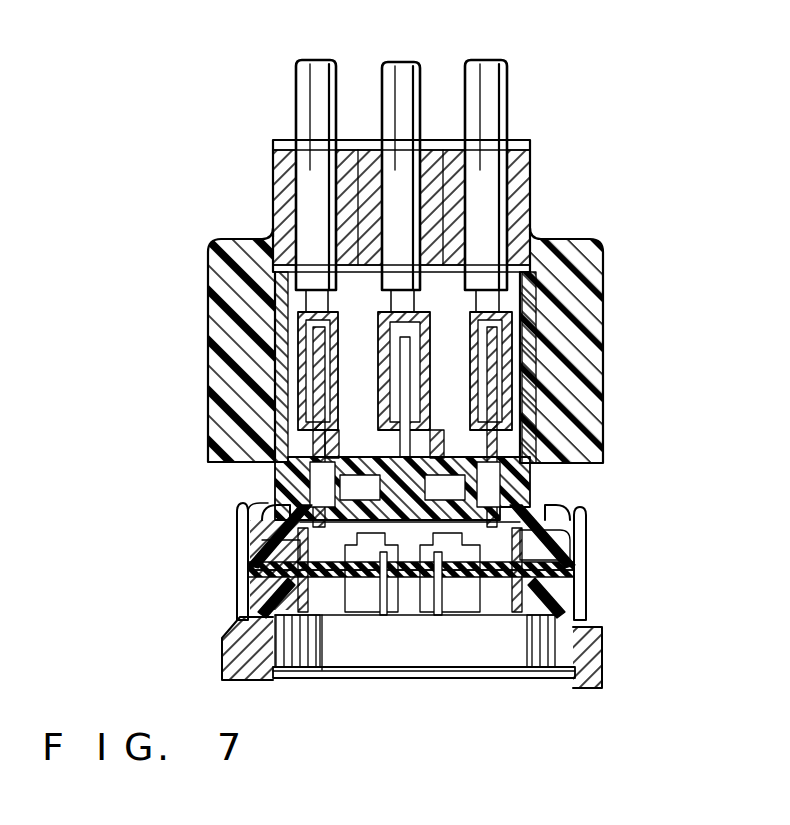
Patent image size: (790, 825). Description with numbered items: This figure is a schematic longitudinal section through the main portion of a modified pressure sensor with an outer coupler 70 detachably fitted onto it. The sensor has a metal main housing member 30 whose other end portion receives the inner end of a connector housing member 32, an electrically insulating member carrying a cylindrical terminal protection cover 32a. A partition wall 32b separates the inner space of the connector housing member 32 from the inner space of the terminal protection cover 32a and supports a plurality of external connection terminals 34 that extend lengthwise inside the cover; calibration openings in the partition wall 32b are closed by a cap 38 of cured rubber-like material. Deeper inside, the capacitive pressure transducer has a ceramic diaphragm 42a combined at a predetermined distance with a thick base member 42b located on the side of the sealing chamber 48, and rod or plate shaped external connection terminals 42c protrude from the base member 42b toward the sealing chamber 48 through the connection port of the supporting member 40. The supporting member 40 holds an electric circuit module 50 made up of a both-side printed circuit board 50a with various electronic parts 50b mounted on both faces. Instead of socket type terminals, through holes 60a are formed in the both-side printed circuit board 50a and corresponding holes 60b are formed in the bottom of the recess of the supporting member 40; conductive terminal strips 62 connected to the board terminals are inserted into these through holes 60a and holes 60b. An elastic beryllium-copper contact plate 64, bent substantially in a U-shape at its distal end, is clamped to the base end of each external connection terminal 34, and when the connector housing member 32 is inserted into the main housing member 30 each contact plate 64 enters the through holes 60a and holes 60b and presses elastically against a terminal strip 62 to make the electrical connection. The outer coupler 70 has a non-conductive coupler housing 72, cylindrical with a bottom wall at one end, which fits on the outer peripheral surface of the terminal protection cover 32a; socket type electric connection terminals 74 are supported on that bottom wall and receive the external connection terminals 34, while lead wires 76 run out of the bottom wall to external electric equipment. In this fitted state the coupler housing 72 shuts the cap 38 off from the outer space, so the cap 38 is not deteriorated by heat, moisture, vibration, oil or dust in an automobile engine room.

The main housing member 30 is at (603, 674).
The connector housing member 32 is at (558, 494).
The terminal protection cover 32a is at (540, 357).
The partition wall 32b is at (540, 428).
The external connection terminals 34 is at (330, 446).
The cap 38 is at (430, 460).
The supporting member 40 is at (575, 612).
The diaphragm 42a is at (527, 676).
The base member 42b is at (555, 650).
The external connection terminals 42c is at (395, 615).
The sealing chamber 48 is at (570, 549).
The electric circuit module 50 is at (300, 547).
The both-side printed circuit board 50a is at (322, 640).
The electronic parts 50b is at (356, 600).
The through holes 60a is at (290, 570).
The holes 60b is at (290, 585).
The terminal strips 62 is at (305, 560).
The contact plate 64 is at (270, 503).
The outer coupler 70 is at (538, 208).
The coupler housing 72 is at (603, 285).
The socket type electric connection terminals 74 is at (345, 337).
The lead wires 76 is at (386, 70).